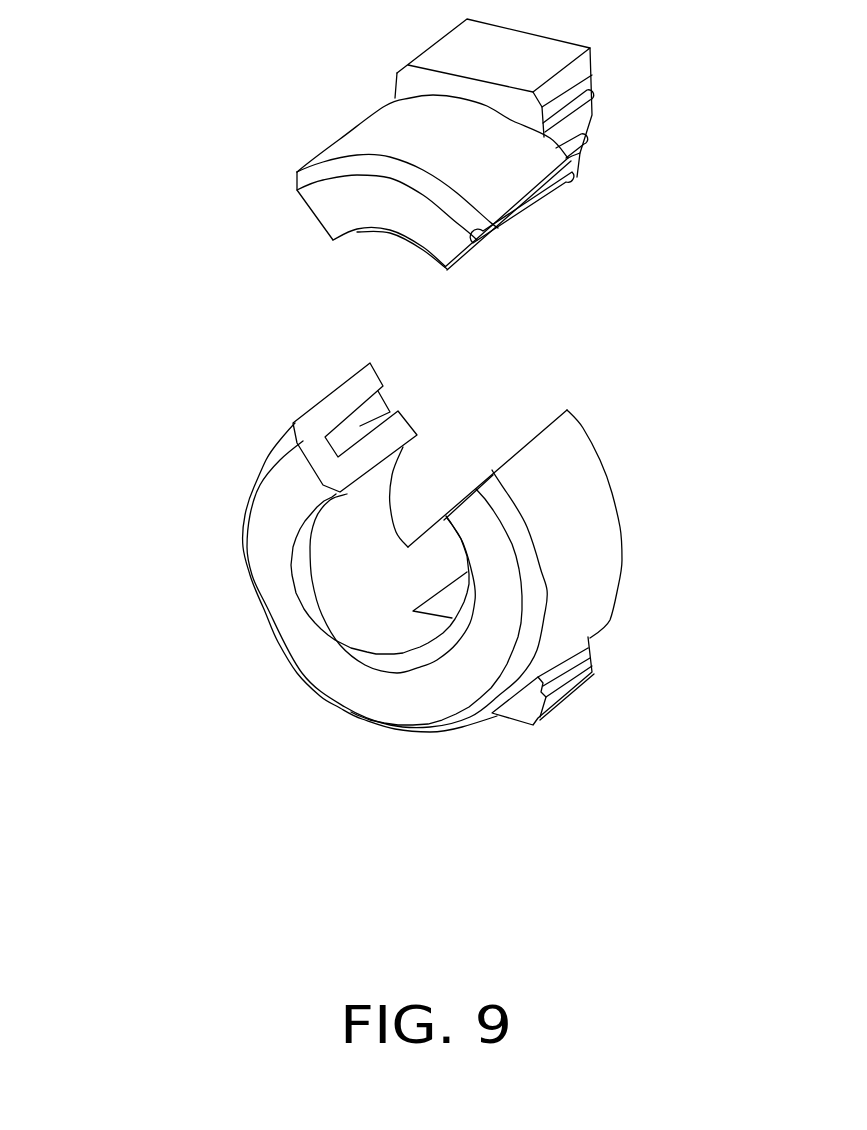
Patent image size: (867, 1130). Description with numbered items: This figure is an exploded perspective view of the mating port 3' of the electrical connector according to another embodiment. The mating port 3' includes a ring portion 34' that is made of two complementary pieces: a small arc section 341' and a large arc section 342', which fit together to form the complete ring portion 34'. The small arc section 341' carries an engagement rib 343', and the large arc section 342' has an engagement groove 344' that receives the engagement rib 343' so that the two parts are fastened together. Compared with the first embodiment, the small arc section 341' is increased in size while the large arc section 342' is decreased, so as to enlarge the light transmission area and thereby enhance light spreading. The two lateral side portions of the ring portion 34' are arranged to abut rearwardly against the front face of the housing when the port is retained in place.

The mating port 3' is at (369, 369).
The ring portion 34' is at (369, 375).
The small arc section 341' is at (414, 144).
The large arc section 342' is at (389, 518).
The engagement rib 343' is at (573, 207).
The engagement groove 344' is at (373, 398).